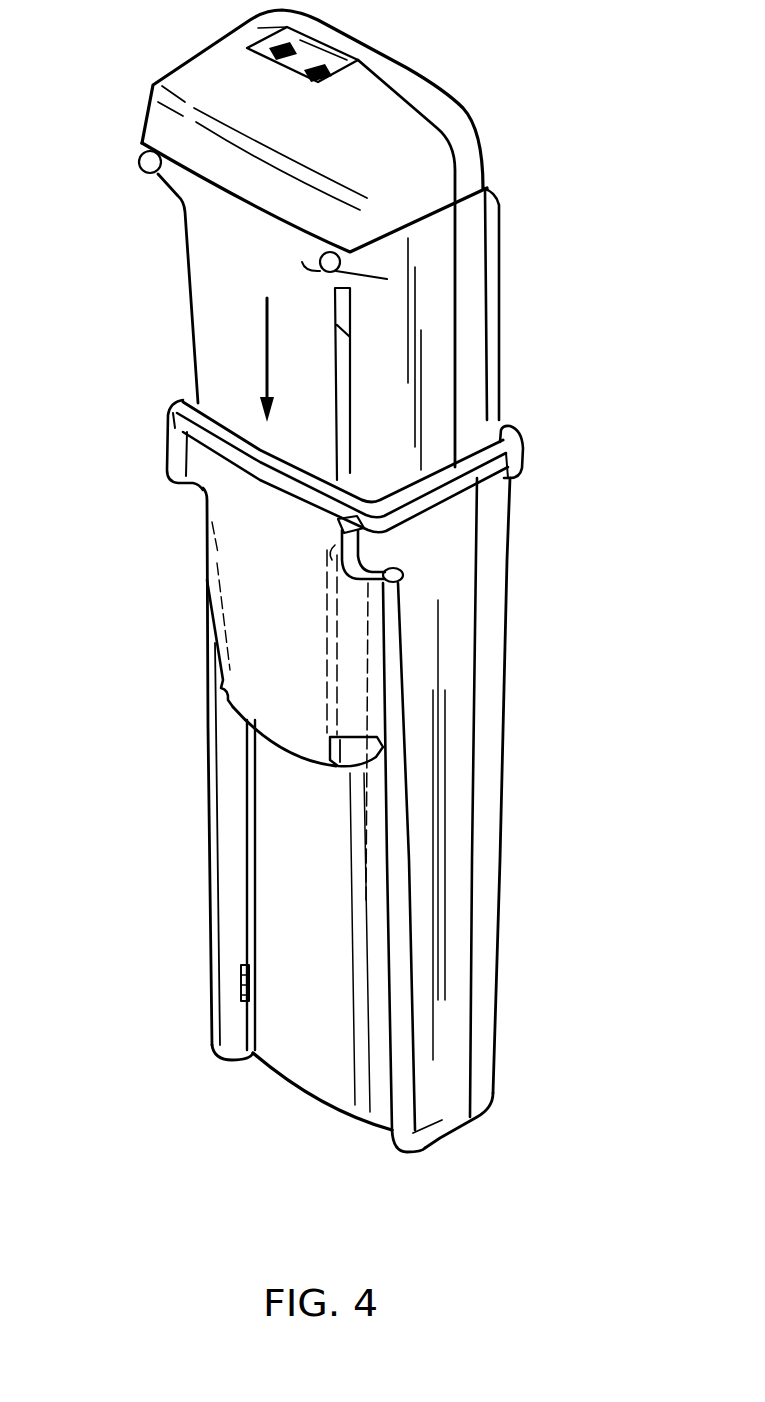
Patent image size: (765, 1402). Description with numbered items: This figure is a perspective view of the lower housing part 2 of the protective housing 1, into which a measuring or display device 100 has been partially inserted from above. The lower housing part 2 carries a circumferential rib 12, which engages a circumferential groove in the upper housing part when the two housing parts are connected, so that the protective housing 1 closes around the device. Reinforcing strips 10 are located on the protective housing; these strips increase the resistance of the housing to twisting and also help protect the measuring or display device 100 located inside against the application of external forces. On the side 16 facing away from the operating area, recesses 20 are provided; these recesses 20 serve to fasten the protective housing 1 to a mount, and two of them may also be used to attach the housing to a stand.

The protective housing 1 is at (204, 1186).
The lower housing part 2 is at (447, 983).
The reinforcing strips 10 is at (238, 1033).
The circumferential rib 12 is at (183, 402).
The side facing away from the operating area 16 is at (250, 857).
The recesses 20 is at (383, 747).
The measuring or display device 100 is at (361, 133).